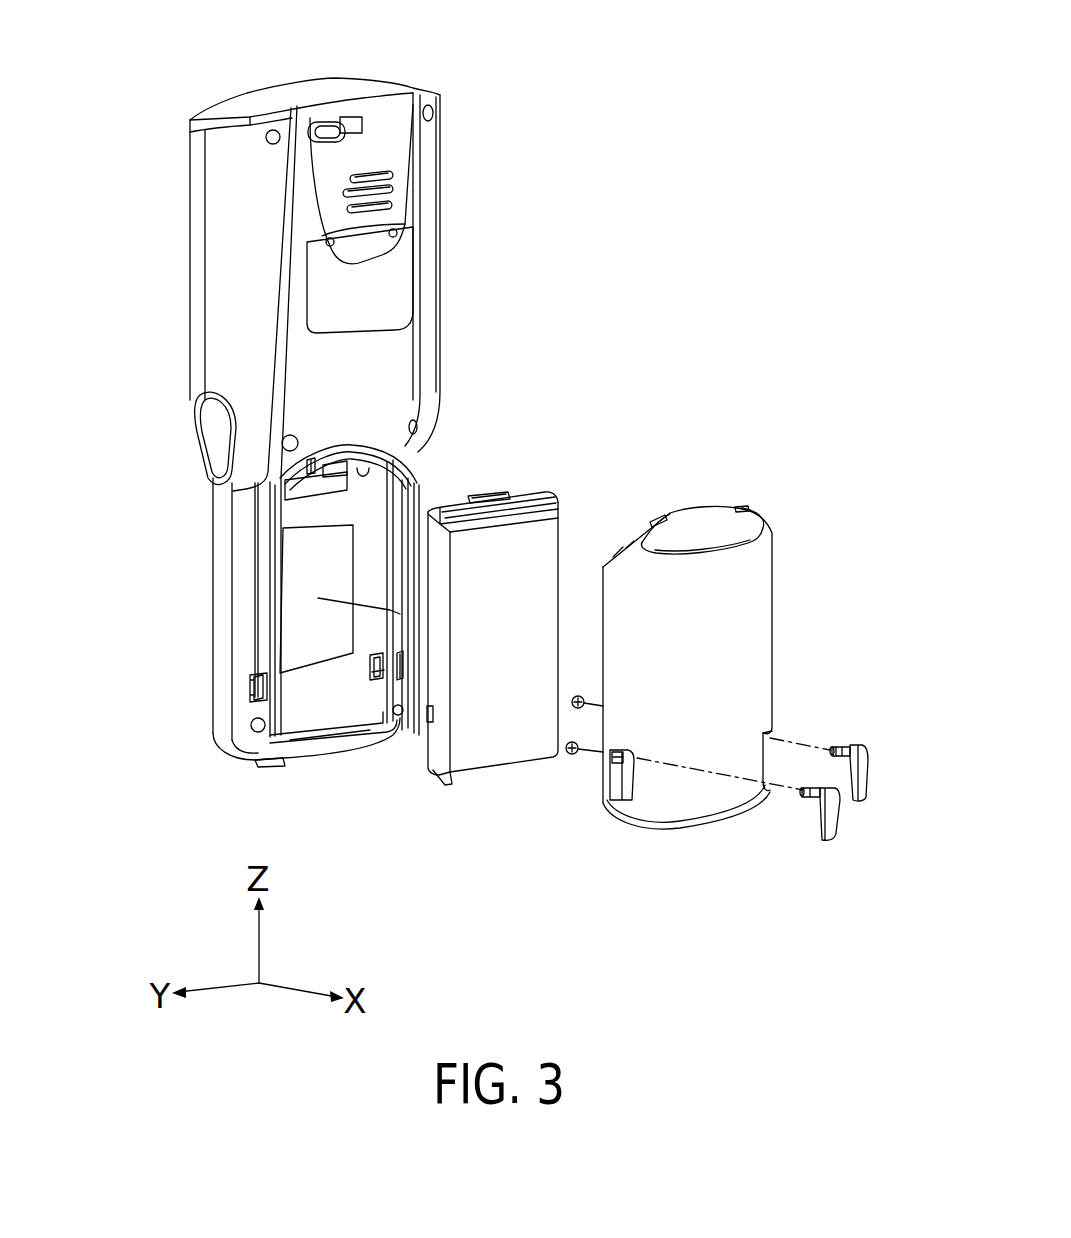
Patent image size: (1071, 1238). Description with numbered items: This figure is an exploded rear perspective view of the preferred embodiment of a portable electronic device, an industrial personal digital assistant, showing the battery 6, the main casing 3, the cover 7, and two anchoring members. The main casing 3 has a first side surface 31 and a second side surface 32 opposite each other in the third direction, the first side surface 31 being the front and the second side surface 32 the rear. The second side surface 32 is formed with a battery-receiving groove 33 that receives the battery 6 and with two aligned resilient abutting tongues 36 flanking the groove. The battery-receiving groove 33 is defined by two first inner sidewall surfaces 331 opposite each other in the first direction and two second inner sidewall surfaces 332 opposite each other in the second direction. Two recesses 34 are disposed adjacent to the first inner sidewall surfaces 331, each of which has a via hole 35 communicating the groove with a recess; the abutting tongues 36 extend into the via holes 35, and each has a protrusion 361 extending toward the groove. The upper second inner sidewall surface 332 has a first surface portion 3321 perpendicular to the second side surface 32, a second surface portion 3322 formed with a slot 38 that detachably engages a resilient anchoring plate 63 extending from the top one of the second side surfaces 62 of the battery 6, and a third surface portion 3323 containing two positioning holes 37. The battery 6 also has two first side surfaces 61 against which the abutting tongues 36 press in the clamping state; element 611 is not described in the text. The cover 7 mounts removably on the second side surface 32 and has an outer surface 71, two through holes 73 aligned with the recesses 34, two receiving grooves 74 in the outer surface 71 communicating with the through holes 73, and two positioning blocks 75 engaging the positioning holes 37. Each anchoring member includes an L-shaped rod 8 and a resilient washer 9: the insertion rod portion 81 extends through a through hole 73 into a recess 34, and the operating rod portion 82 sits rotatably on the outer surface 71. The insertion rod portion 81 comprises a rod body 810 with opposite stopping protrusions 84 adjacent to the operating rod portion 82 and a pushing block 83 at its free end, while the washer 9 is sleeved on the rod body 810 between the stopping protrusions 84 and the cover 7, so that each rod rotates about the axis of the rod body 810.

The main casing 3 is at (402, 80).
The first side surface 31 is at (190, 305).
The second side surface 32 is at (403, 370).
The battery-receiving groove 33 is at (315, 522).
The first inner sidewall surfaces 331 is at (380, 565).
The second inner sidewall surfaces 332 is at (133, 470).
The first surface portion 3321 is at (330, 500).
The second surface portion 3322 is at (307, 460).
The third surface portion 3323 is at (330, 478).
The recesses 34 is at (263, 703).
The via hole 35 is at (377, 683).
The resilient abutting tongues 36 is at (373, 672).
The protrusion 361 is at (302, 735).
The positioning holes 37 is at (285, 418).
The slot 38 is at (380, 360).
The battery 6 is at (575, 507).
The first side surfaces 61 is at (560, 550).
The second side surfaces 62 is at (530, 495).
The resilient anchoring plate 63 is at (488, 492).
The battery slot 611 is at (428, 723).
The cover 7 is at (788, 553).
The outer surface 71 is at (763, 598).
The through holes 73 is at (613, 757).
The receiving grooves 74 is at (773, 735).
The positioning blocks 75 is at (655, 520).
The L-shaped rod 8 is at (928, 680).
The insertion rod portion 81 is at (855, 730).
The rod body 810 is at (847, 745).
The operating rod portion 82 is at (882, 750).
The pushing block 83 is at (833, 748).
The stopping protrusions 84 is at (845, 757).
The resilient washer 9 is at (578, 694).